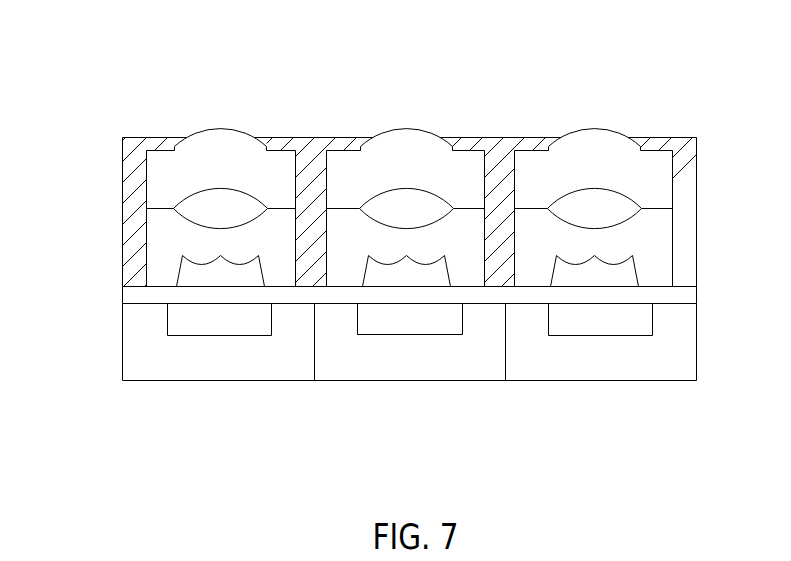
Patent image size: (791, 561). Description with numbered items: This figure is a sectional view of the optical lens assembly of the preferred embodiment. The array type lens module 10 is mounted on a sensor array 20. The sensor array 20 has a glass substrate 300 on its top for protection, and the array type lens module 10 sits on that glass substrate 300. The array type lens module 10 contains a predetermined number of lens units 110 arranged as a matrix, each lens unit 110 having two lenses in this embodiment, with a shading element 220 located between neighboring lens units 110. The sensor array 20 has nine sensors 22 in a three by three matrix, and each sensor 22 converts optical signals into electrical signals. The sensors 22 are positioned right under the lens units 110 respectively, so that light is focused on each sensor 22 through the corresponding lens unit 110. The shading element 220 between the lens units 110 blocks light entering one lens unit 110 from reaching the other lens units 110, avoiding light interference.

The array type lens module 10 is at (373, 150).
The sensor array 20 is at (436, 388).
The sensor 22 is at (217, 365).
The lens unit 110 is at (220, 148).
The shading element 220 is at (137, 198).
The glass substrate 300 is at (140, 295).